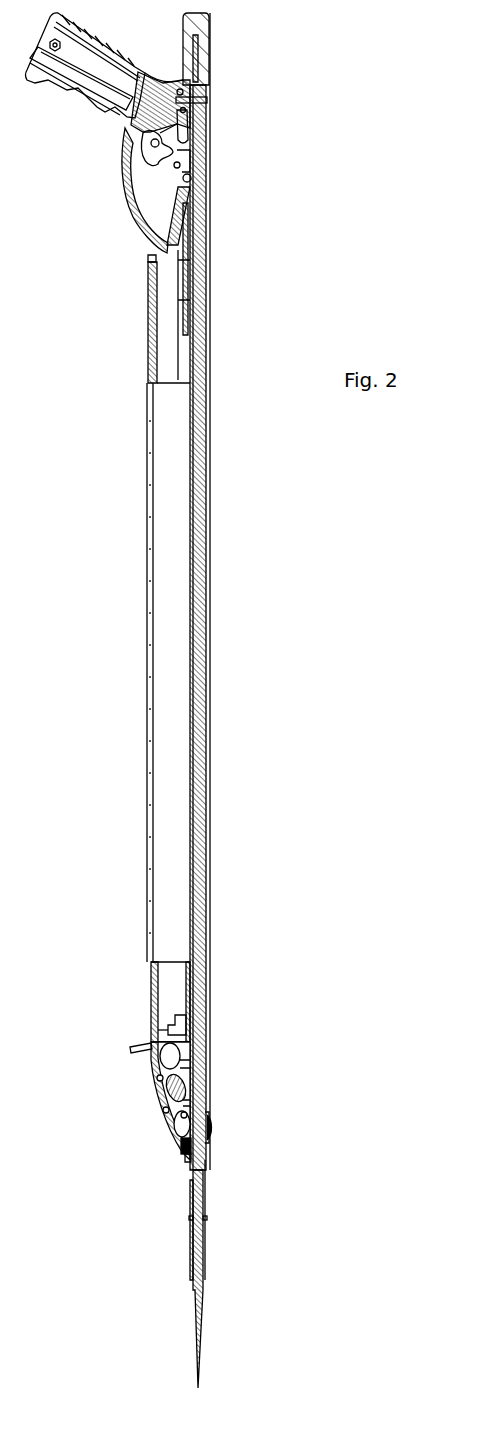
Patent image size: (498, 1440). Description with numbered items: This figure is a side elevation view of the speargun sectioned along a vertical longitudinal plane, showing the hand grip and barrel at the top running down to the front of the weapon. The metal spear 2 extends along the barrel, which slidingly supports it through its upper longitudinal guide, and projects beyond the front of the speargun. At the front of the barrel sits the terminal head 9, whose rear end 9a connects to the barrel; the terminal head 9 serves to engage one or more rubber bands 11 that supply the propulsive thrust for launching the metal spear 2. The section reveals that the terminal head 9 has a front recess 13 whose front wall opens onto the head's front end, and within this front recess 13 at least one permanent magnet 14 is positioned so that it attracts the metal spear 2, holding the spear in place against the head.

The metal spear 2 is at (207, 1287).
The terminal head 9 is at (158, 1112).
The rear end 9a is at (150, 990).
The rubber bands 11 is at (210, 1125).
The front recess 13 is at (178, 1158).
The permanent magnet 14 is at (187, 1157).